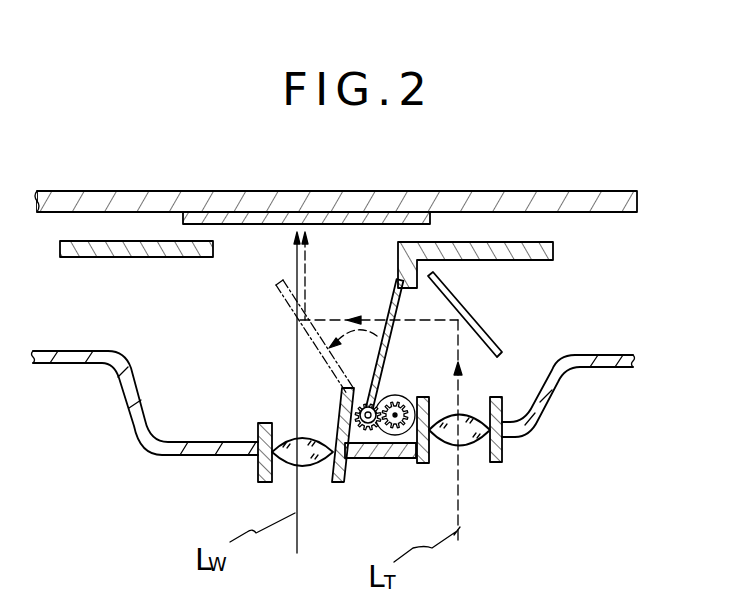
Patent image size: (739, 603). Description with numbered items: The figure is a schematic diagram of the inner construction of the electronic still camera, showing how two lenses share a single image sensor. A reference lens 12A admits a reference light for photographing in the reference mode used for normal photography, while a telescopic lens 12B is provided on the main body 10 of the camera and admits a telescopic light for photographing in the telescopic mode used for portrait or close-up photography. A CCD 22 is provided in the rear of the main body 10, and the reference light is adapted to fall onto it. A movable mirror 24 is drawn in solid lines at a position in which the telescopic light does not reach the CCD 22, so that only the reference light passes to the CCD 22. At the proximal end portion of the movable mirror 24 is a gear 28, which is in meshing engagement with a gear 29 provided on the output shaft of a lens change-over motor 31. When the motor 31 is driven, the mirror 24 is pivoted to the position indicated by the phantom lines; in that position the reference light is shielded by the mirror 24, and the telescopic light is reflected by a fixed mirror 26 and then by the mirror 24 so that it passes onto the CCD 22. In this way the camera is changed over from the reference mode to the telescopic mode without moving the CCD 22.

The main body 10 is at (145, 438).
The reference lens 12A is at (311, 468).
The telescopic lens 12B is at (473, 444).
The CCD 22 is at (400, 191).
The movable mirror 24 is at (388, 309).
The fixed mirror 26 is at (488, 337).
The gear 28 is at (366, 440).
The gear 29 is at (385, 458).
The lens change-over motor 31 is at (399, 442).